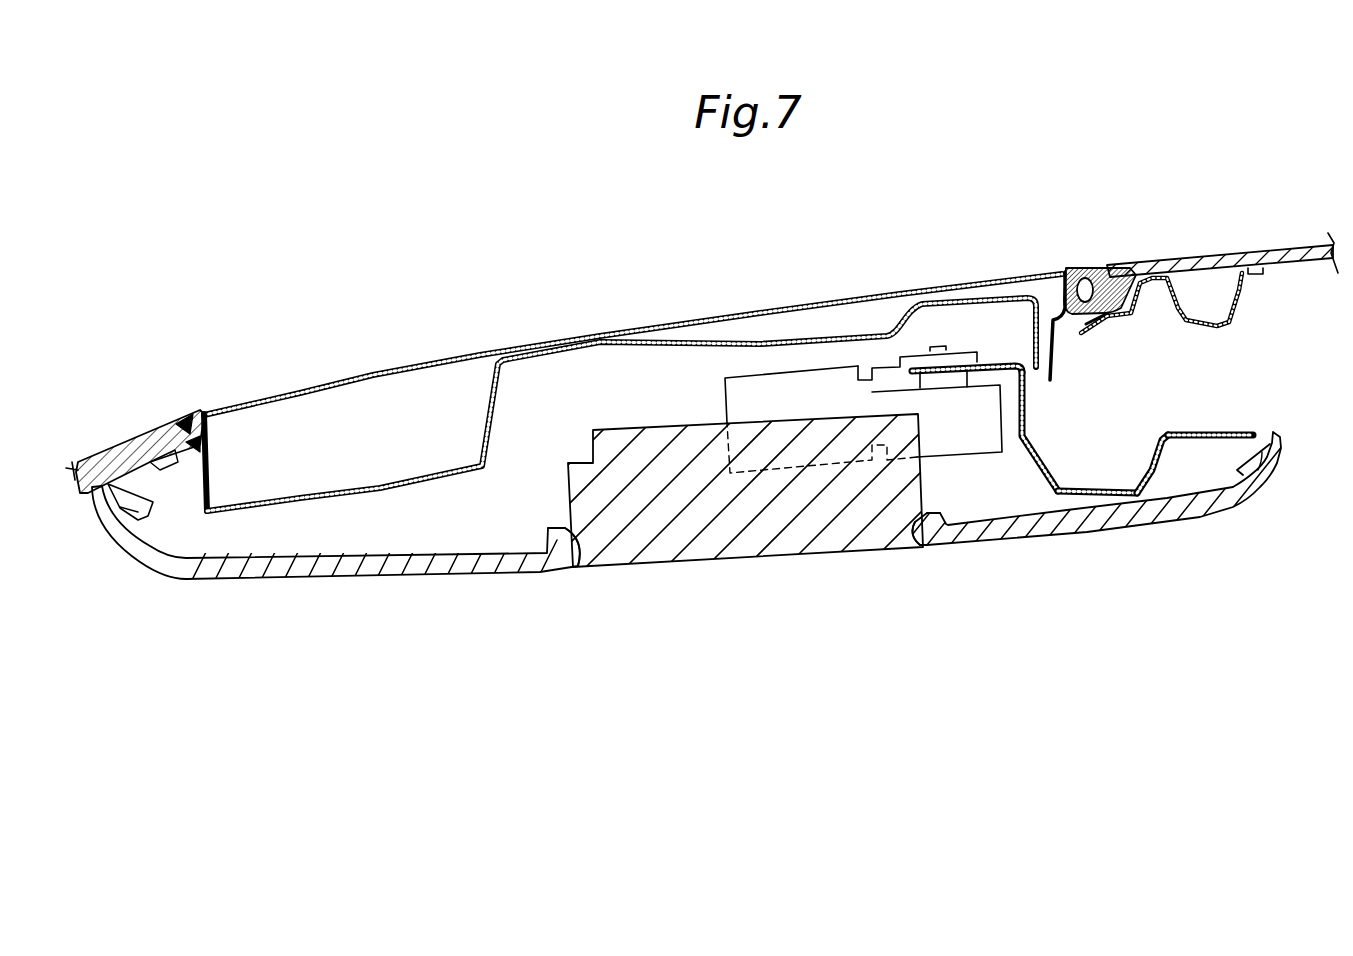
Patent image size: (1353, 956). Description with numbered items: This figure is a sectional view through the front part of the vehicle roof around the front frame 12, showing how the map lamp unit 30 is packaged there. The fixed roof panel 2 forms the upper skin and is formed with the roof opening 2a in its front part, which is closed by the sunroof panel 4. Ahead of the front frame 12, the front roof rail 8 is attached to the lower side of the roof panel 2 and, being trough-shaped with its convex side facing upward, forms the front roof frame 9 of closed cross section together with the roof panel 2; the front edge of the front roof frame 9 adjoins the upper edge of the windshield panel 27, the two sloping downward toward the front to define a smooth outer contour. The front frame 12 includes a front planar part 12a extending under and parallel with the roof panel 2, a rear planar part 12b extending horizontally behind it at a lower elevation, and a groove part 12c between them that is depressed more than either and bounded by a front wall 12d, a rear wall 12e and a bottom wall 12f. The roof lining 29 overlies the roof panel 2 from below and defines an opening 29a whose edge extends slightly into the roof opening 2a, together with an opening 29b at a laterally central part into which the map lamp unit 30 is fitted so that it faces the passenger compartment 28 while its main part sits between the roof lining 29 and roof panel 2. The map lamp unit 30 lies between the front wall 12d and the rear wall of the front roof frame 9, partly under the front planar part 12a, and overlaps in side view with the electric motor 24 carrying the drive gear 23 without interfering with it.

The fixed roof panel 2 is at (633, 371).
The roof opening 2a is at (1077, 266).
The sunroof panel 4 is at (1192, 260).
The front roof rail 8 is at (495, 424).
The front roof frame 9 is at (322, 384).
The front frame 12 is at (1082, 383).
The front planar part 12a is at (986, 362).
The rear planar part 12b is at (1217, 430).
The groove part 12c is at (1080, 379).
The front wall 12d is at (1027, 409).
The rear wall 12e is at (1150, 460).
The bottom wall 12f is at (1079, 489).
The drive gear 23 is at (936, 345).
The electric motor 24 is at (968, 448).
The windshield panel 27 is at (113, 455).
The passenger compartment 28 is at (893, 677).
The roof lining 29 is at (722, 531).
The opening 29a is at (1283, 460).
The opening 29b is at (584, 548).
The map lamp unit 30 is at (800, 548).